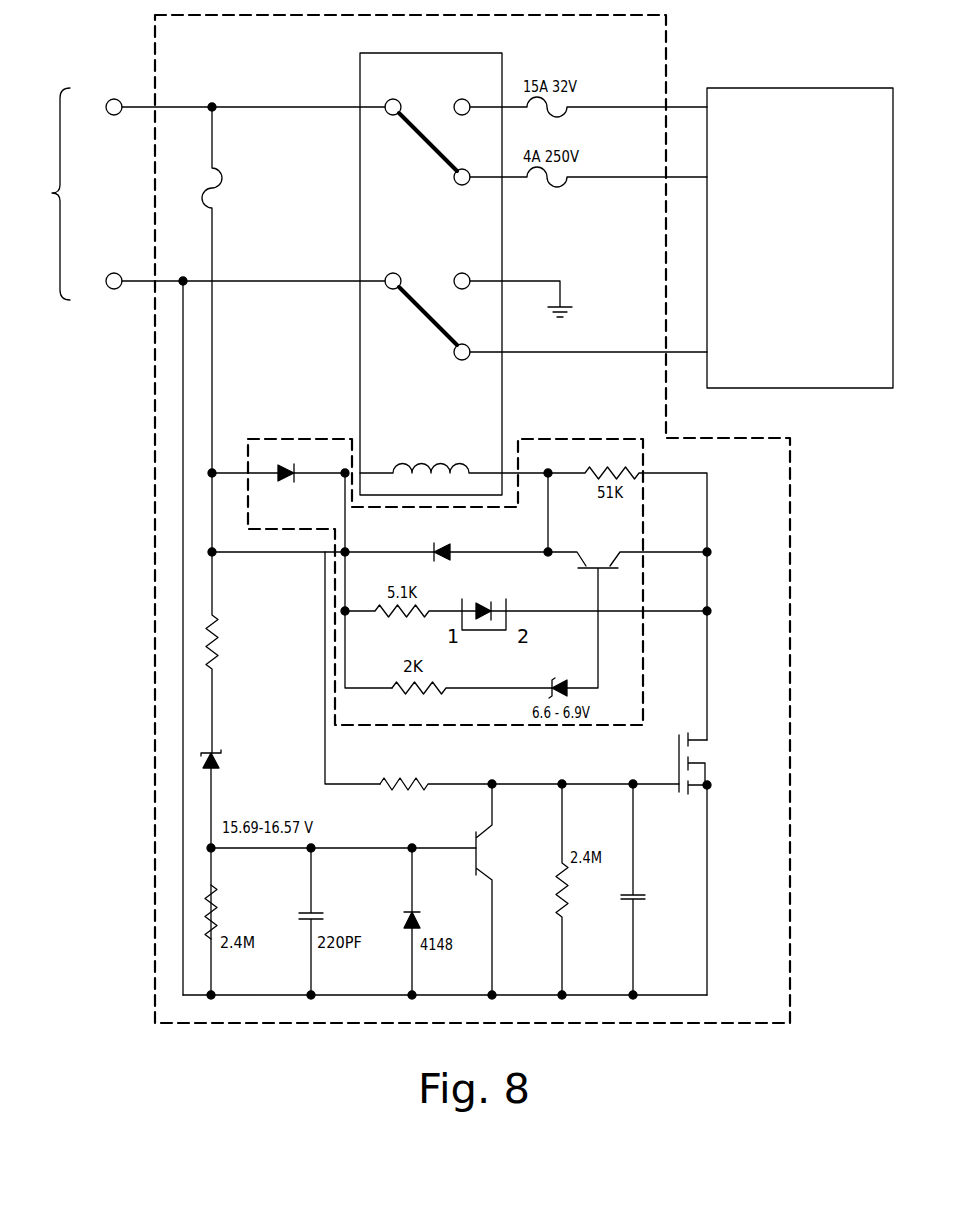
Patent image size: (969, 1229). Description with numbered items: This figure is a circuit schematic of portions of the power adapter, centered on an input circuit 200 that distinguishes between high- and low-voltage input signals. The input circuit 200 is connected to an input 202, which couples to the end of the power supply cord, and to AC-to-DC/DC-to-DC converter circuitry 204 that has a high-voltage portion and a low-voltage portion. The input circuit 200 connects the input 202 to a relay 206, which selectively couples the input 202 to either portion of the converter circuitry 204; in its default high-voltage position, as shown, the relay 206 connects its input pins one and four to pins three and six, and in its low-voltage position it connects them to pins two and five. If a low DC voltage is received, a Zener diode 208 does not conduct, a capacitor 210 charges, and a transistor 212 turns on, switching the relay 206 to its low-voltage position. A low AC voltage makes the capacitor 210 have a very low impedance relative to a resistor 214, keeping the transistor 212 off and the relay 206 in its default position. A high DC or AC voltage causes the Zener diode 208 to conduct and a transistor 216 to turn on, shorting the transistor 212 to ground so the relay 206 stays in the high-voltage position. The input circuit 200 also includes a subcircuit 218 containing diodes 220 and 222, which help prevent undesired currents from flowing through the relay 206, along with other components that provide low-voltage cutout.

The input circuit 200 is at (668, 50).
The input 202 is at (197, 541).
The AC-to-DC/DC-to-DC converter circuitry 204 is at (768, 88).
The relay 206 is at (427, 366).
The Zener diode 208 is at (222, 755).
The capacitor 210 is at (641, 892).
The transistor 212 is at (672, 757).
The resistor 214 is at (383, 782).
The transistor 216 is at (462, 836).
The subcircuit 218 is at (565, 438).
The diode 220 is at (283, 463).
The diode 222 is at (450, 558).